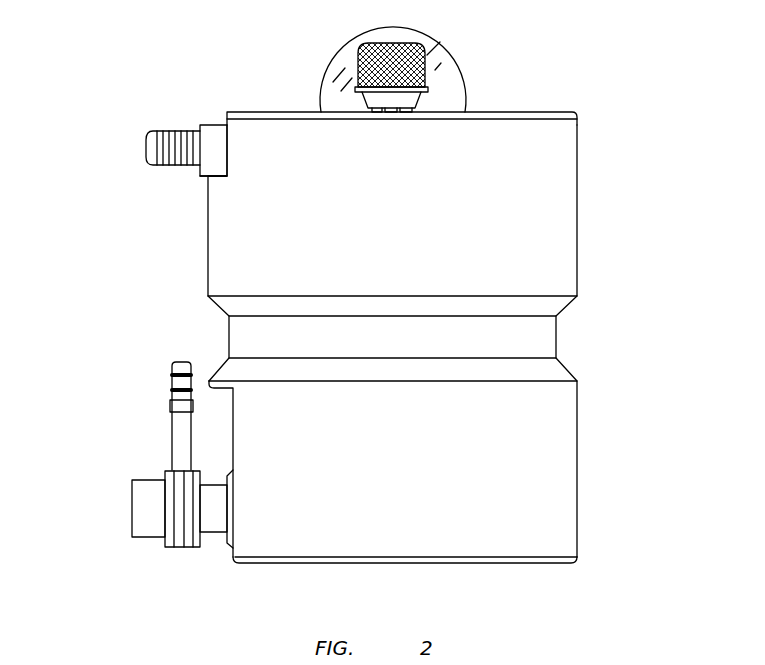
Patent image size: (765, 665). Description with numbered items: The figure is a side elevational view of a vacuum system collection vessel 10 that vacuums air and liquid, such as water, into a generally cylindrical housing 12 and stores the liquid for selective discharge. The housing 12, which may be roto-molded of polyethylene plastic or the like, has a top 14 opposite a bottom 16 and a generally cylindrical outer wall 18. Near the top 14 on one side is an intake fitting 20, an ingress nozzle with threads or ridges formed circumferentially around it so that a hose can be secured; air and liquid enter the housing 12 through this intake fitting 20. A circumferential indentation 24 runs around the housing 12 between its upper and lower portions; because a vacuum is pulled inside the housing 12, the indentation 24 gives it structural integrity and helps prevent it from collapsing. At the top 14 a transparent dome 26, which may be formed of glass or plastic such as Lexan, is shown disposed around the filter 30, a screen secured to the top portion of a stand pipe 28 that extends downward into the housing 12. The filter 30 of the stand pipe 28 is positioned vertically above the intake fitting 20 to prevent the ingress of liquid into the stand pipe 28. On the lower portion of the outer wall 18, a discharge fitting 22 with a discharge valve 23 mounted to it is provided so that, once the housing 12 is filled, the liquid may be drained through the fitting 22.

The vacuum system collection vessel 10 is at (124, 97).
The housing 12 is at (566, 212).
The top 14 is at (560, 112).
The bottom 16 is at (550, 563).
The outer wall 18 is at (563, 438).
The intake fitting 20 is at (158, 164).
The discharge fitting 22 is at (148, 532).
The discharge valve 23 is at (178, 418).
The circumferential indentation 24 is at (548, 339).
The transparent dome 26 is at (455, 85).
The stand pipe 28 is at (338, 92).
The filter 30 is at (412, 45).